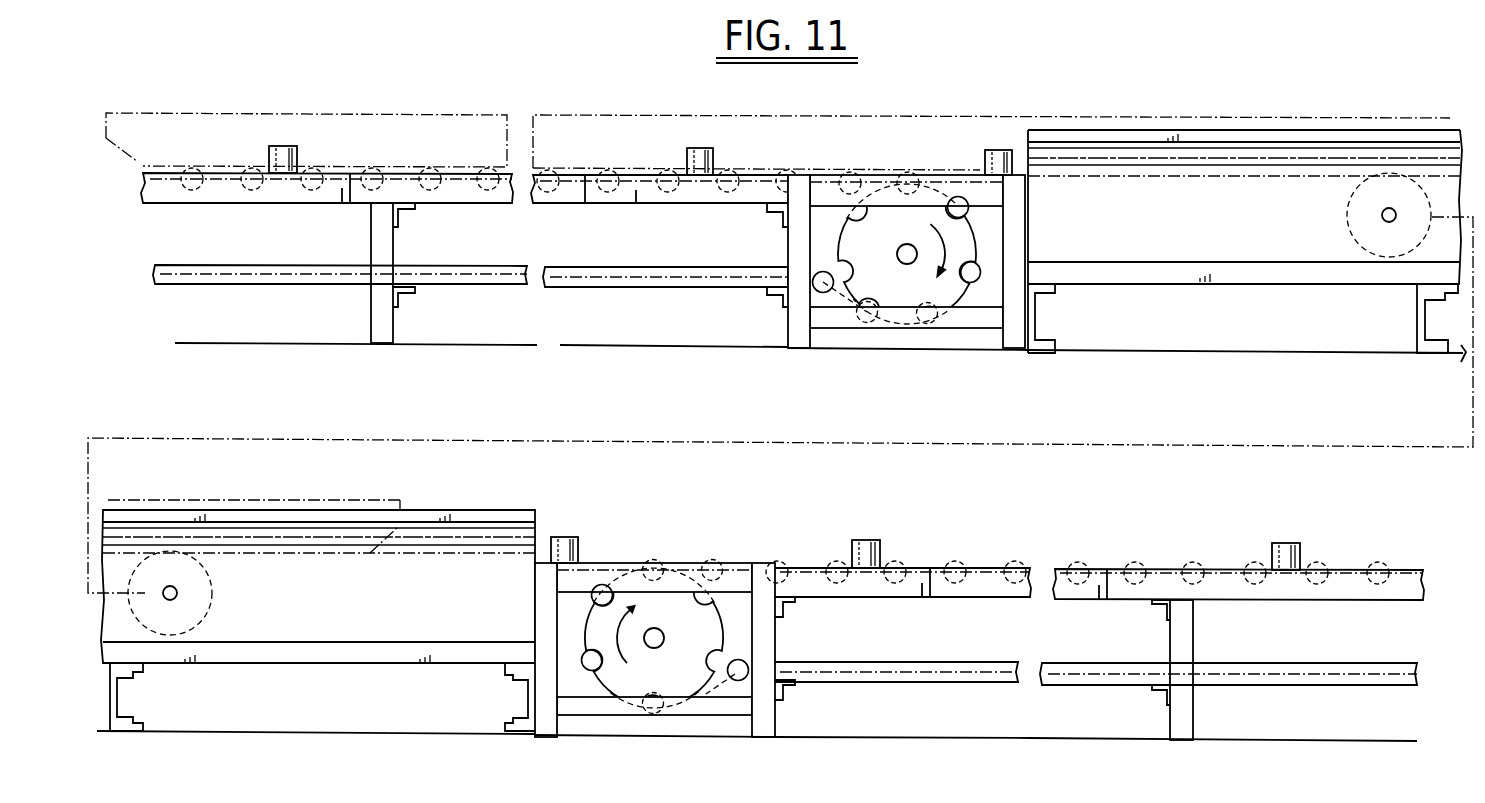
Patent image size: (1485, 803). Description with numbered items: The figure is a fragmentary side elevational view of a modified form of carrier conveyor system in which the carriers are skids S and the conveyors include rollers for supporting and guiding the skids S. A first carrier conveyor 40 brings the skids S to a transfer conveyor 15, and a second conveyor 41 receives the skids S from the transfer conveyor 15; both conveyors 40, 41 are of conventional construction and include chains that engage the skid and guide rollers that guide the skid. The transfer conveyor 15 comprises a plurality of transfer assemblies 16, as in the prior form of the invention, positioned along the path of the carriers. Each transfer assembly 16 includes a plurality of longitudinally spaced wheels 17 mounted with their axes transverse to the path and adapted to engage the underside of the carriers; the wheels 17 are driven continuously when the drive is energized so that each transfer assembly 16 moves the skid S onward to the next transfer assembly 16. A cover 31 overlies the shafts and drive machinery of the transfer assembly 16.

The skid S is at (392, 135).
The transfer conveyor 15 is at (1226, 126).
The transfer assembly 16 is at (1333, 140).
The wheel 17 is at (1352, 223).
The conveyor belt 31 is at (1092, 150).
The first carrier conveyor 40 is at (586, 190).
The second conveyor 41 is at (1020, 568).